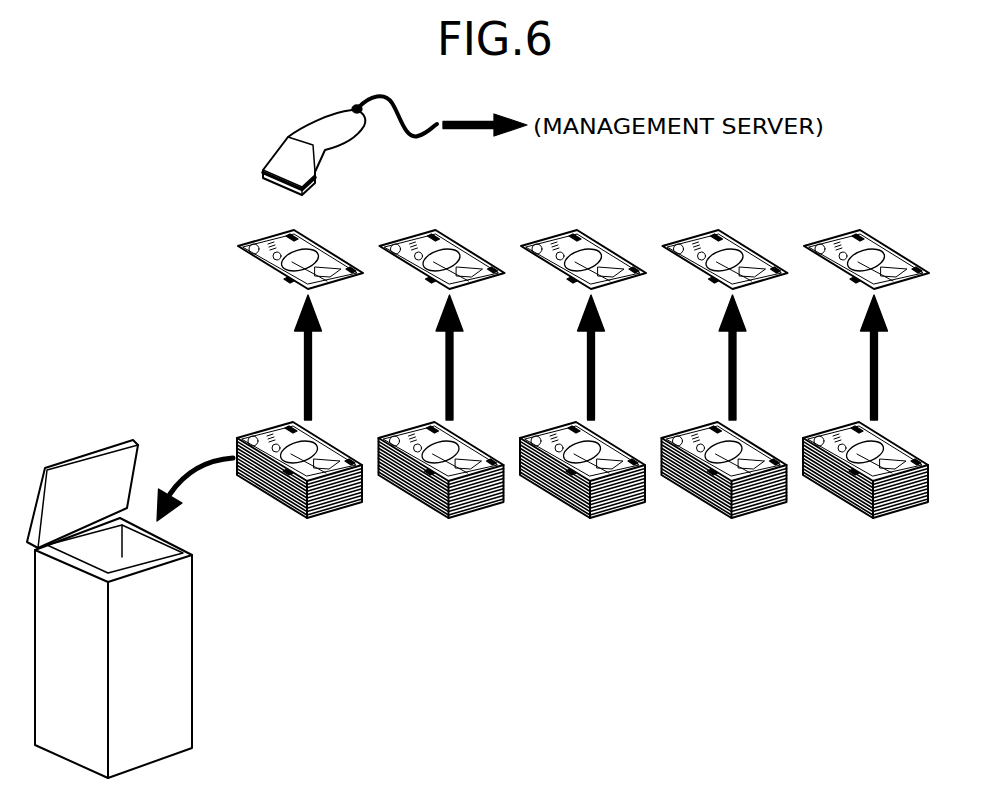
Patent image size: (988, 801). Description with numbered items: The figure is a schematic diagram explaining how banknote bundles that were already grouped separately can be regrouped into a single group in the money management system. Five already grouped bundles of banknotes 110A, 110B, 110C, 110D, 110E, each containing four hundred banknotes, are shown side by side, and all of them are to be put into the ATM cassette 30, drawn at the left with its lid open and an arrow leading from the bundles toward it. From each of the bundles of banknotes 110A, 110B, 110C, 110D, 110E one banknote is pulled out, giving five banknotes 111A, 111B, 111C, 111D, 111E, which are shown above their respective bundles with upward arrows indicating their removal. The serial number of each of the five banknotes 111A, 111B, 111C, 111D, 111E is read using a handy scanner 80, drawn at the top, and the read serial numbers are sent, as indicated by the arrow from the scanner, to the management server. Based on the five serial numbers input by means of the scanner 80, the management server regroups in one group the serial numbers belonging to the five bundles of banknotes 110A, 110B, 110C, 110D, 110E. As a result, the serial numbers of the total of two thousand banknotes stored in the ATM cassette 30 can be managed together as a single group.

The ATM cassette 30 is at (193, 700).
The handy scanner 80 is at (302, 130).
The bundle of banknotes 110A is at (290, 457).
The bundle of banknotes 110B is at (432, 457).
The bundle of banknotes 110C is at (573, 457).
The bundle of banknotes 110D is at (715, 457).
The bundle of banknotes 110E is at (856, 457).
The banknote 111A is at (290, 246).
The banknote 111B is at (432, 246).
The banknote 111C is at (573, 246).
The banknote 111D is at (715, 246).
The banknote 111E is at (856, 246).